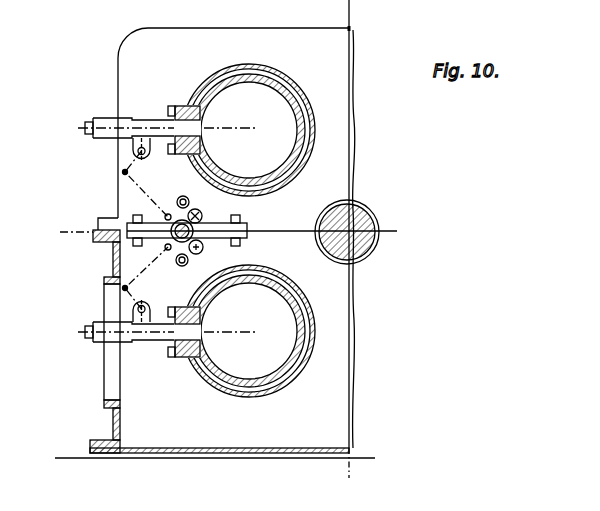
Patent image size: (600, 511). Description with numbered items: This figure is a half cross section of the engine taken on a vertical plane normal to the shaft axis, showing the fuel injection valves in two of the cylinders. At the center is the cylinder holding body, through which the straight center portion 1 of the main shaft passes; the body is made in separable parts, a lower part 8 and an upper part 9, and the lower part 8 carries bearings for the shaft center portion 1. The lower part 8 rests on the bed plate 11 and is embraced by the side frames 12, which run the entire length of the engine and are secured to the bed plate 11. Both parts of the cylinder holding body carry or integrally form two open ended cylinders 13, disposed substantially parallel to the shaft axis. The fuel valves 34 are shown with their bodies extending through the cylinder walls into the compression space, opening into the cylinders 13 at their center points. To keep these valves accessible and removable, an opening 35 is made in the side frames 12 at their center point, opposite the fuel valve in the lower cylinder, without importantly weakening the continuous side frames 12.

The center portion of the main shaft 1 is at (376, 224).
The lower part of the cylinder holding body 8 is at (332, 313).
The upper part of the cylinder holding body 9 is at (130, 63).
The bed plate 11 is at (217, 453).
The side frame 12 is at (113, 266).
The open ended cylinder 13 is at (300, 141).
The fuel valve 34 is at (122, 126).
The opening 35 is at (112, 353).